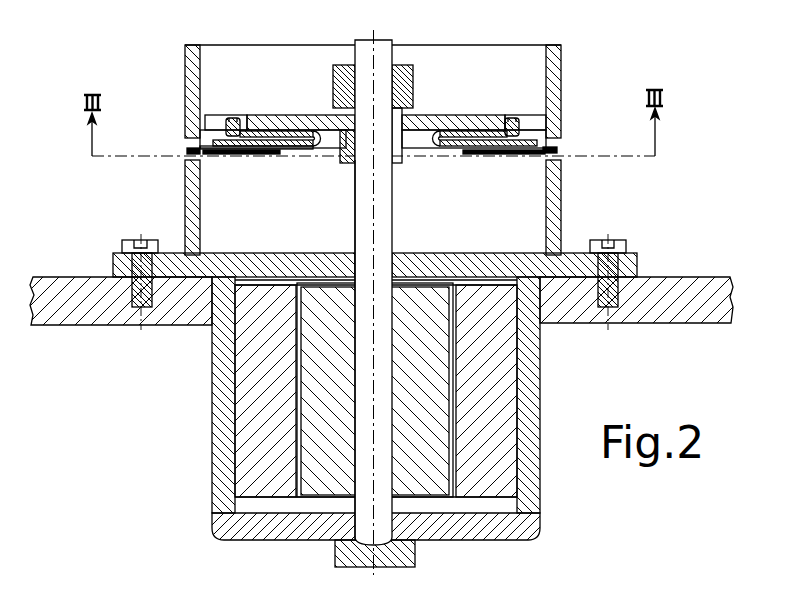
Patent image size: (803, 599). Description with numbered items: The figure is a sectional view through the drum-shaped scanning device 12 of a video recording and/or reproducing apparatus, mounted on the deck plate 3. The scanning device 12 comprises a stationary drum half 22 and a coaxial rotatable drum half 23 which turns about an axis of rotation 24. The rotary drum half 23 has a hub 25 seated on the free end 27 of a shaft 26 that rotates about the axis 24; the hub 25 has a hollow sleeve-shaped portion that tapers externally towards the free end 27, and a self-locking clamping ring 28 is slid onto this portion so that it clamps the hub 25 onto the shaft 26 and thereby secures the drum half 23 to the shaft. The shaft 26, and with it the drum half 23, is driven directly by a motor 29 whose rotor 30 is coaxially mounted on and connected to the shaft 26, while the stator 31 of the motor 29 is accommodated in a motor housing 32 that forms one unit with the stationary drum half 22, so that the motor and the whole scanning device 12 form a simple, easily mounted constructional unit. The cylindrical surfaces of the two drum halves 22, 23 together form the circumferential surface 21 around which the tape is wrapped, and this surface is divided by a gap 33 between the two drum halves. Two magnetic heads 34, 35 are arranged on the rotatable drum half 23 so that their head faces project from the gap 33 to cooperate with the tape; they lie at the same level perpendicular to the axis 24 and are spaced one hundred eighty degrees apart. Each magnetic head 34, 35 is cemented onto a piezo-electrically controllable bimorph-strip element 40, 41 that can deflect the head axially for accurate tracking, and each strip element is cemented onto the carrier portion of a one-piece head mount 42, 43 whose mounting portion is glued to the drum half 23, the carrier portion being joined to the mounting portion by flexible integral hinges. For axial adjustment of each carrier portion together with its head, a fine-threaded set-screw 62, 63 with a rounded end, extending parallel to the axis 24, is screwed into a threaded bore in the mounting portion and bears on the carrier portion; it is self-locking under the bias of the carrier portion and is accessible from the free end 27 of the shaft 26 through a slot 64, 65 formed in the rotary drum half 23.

The deck plate 3 is at (65, 285).
The drum-shaped scanning device 12 is at (163, 89).
The circumferential surface 21 is at (414, 81).
The stationary drum half 22 is at (553, 200).
The rotatable drum half 23 is at (561, 109).
The axis of rotation 24 is at (372, 215).
The hub 25 is at (414, 103).
The shaft 26 is at (385, 241).
The free end of the shaft 27 is at (368, 38).
The self-locking clamping ring 28 is at (341, 72).
The motor 29 is at (325, 408).
The rotor 30 is at (432, 478).
The stator 31 is at (492, 350).
The motor housing 32 is at (220, 458).
The gap 33 is at (190, 146).
The magnetic head 34 is at (186, 151).
The magnetic head 35 is at (558, 151).
The bimorph-strip element 40 is at (205, 154).
The bimorph-strip element 41 is at (545, 153).
The head mount 42 is at (287, 152).
The head mount 43 is at (457, 152).
The set-screw 62 is at (232, 118).
The set-screw 63 is at (510, 120).
The slot 64 is at (212, 126).
The slot 65 is at (532, 117).